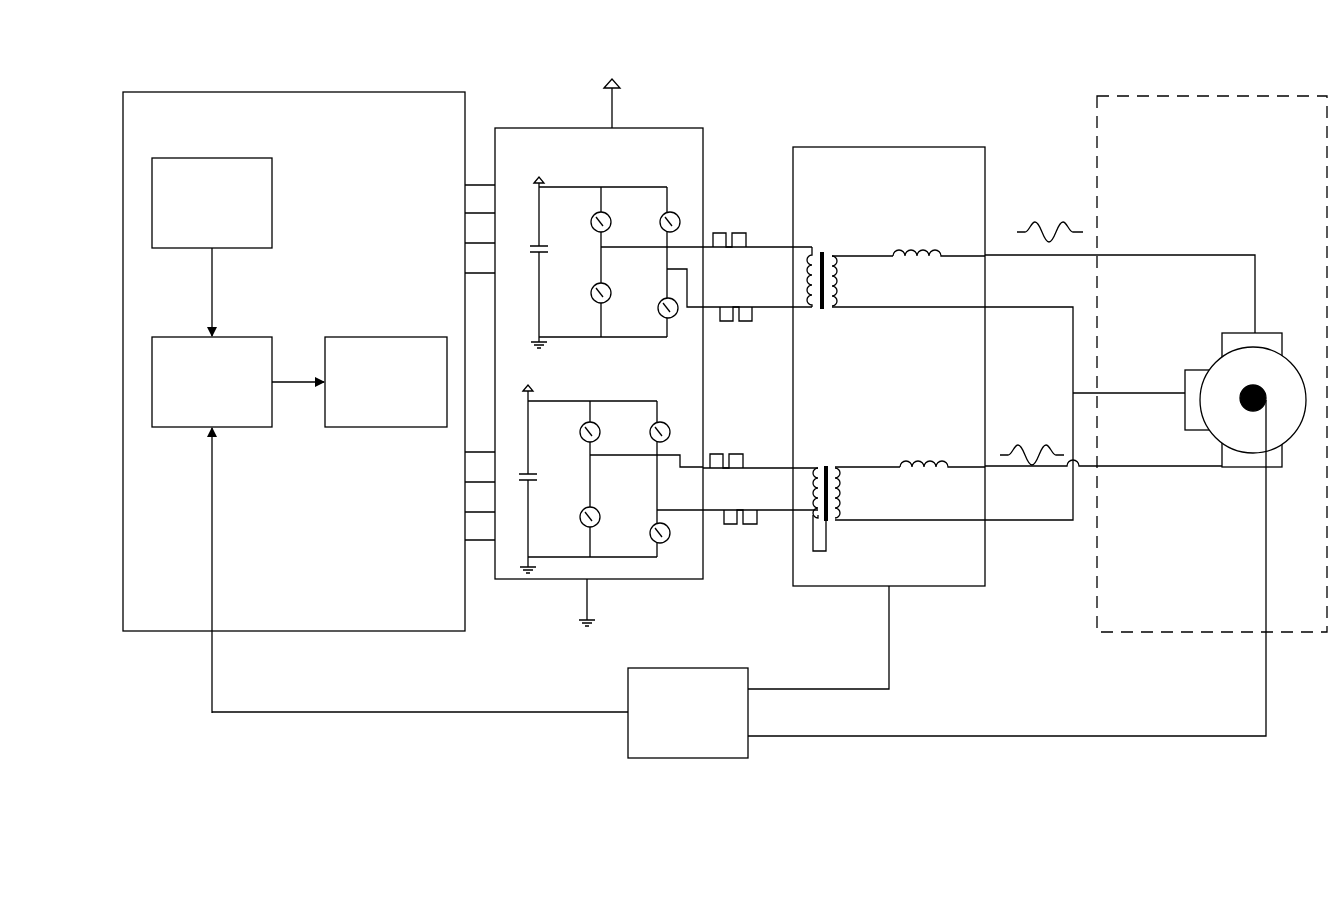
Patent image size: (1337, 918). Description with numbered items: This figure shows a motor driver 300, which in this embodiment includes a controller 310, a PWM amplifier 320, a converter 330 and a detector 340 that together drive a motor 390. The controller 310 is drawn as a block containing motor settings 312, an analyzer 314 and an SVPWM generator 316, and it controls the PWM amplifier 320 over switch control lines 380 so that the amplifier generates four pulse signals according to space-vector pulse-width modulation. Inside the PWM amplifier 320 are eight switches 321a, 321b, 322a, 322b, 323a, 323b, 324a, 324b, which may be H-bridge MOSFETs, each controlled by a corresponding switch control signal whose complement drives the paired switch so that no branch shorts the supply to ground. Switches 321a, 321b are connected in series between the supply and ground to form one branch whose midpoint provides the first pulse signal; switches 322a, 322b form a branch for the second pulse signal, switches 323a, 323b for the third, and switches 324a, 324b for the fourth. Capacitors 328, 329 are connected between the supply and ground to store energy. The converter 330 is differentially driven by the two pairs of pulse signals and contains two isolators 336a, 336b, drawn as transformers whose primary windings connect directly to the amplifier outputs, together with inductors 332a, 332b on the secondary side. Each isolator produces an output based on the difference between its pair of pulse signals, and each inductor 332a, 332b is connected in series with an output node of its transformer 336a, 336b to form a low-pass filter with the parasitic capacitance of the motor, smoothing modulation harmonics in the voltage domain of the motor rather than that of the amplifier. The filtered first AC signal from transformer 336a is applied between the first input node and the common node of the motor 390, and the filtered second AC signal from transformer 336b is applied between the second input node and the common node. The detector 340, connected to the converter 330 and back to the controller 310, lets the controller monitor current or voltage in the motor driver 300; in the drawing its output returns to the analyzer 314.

The motor driver 300 is at (725, 428).
The controller 310 is at (294, 402).
The motor settings 312 is at (212, 203).
The analyzer 314 is at (212, 382).
The SVPWM generator 316 is at (386, 382).
The PWM amplifier 320 is at (599, 353).
The switch 321a is at (591, 222).
The switch 321b is at (585, 293).
The switch 322a is at (660, 222).
The switch 322b is at (648, 290).
The switch 323a is at (580, 432).
The switch 323b is at (574, 517).
The switch 324a is at (650, 432).
The switch 324b is at (644, 533).
The capacitor 328 is at (607, 262).
The capacitor 329 is at (602, 479).
The converter 330 is at (889, 366).
The inductor 332a is at (939, 240).
The inductor 332b is at (942, 452).
The isolator 336a is at (896, 290).
The isolator 336b is at (898, 499).
The detector 340 is at (550, 672).
The switch control lines 380 is at (488, 185).
The motor 390 is at (1037, 416).